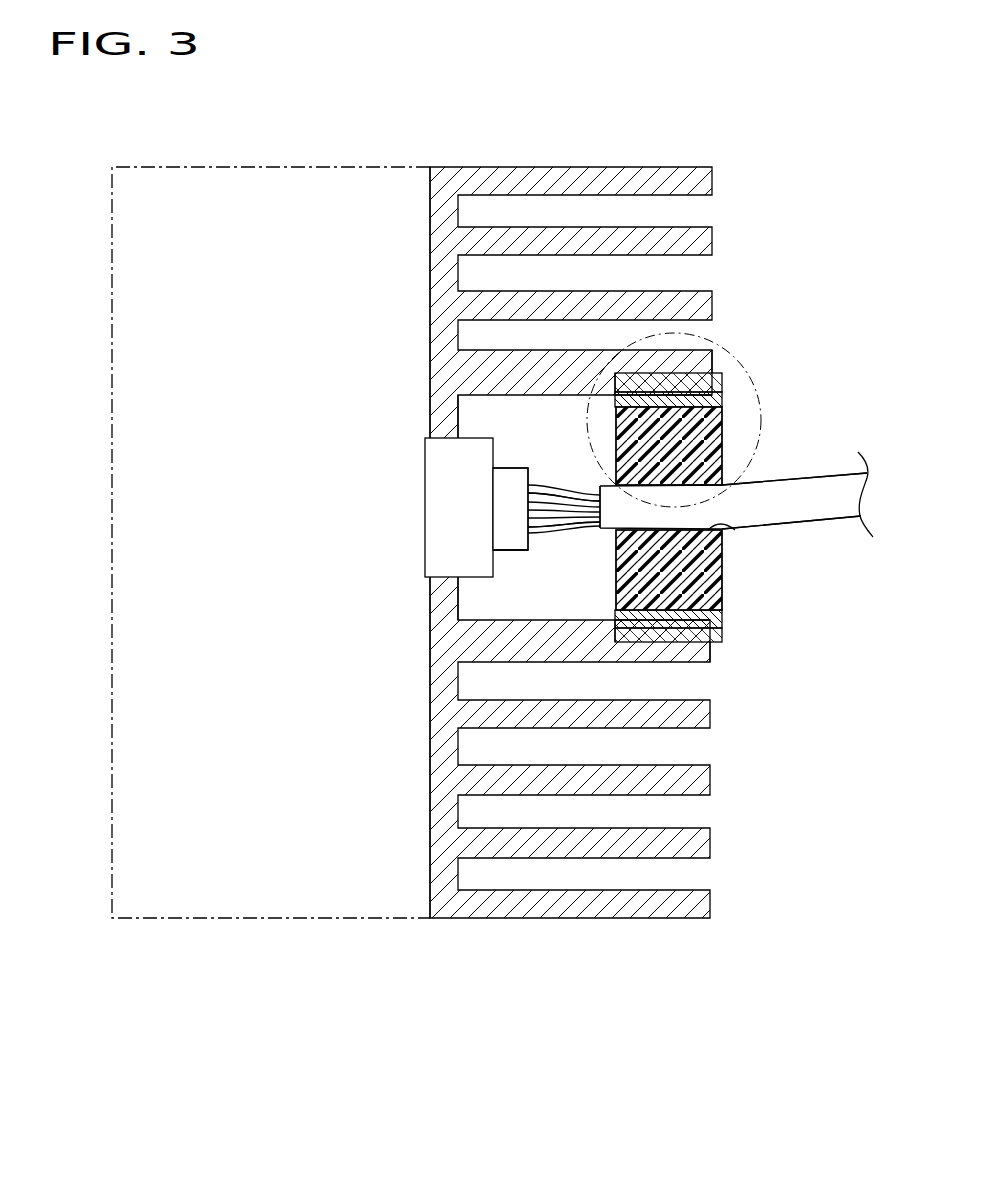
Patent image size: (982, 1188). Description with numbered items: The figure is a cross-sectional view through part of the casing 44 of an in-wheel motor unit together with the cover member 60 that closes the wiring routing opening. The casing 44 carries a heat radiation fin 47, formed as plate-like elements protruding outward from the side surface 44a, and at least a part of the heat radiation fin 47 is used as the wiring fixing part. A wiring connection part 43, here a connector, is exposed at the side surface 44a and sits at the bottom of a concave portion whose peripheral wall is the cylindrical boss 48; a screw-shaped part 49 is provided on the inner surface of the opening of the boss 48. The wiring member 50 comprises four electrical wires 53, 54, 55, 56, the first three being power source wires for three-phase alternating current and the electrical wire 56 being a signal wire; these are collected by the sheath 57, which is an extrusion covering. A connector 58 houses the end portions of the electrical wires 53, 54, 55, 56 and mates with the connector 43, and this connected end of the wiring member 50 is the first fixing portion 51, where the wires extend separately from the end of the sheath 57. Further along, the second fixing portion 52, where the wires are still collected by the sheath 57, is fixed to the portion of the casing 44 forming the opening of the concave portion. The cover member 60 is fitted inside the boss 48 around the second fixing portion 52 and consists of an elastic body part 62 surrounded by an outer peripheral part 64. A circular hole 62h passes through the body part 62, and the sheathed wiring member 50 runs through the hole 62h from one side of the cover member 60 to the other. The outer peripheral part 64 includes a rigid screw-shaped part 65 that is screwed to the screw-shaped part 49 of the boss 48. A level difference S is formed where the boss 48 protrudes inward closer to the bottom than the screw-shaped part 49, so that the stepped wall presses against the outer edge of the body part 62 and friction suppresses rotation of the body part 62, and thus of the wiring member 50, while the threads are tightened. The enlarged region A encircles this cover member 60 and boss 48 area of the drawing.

The wiring connection part 43 is at (438, 512).
The casing 44 is at (370, 920).
The side surface 44a is at (456, 868).
The heat radiation fin 47 is at (712, 240).
The boss 48 is at (700, 366).
The screw-shaped part 49 is at (700, 362).
The wiring member 50 is at (842, 527).
The first fixing portion 51 is at (507, 554).
The second fixing portion 52 is at (683, 446).
The electrical wire 53 is at (545, 483).
The electrical wire 54 is at (553, 485).
The electrical wire 55 is at (585, 498).
The electrical wire 56 is at (548, 522).
The sheath 57 is at (795, 497).
The connector 58 is at (509, 466).
The cover member 60 is at (604, 554).
The body part 62 is at (715, 575).
The hole 62h is at (738, 531).
The outer peripheral part 64 is at (727, 399).
The screw-shaped part 65 is at (725, 388).
The enlarged region A is at (742, 373).
The level difference S is at (612, 368).